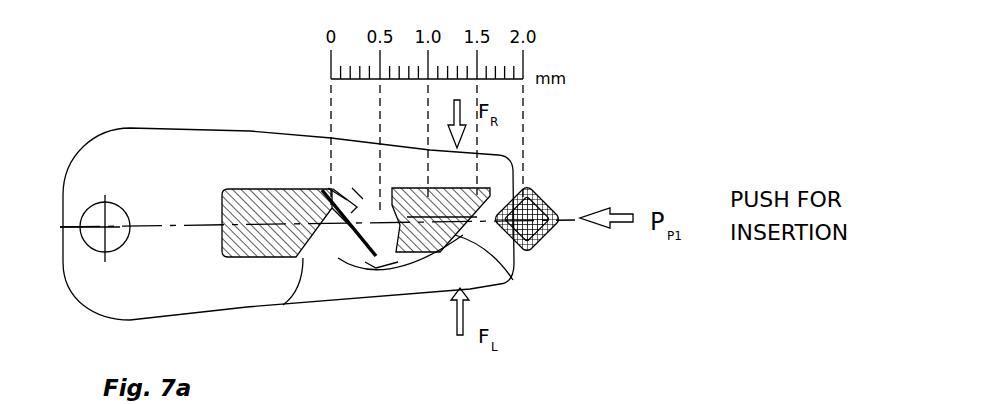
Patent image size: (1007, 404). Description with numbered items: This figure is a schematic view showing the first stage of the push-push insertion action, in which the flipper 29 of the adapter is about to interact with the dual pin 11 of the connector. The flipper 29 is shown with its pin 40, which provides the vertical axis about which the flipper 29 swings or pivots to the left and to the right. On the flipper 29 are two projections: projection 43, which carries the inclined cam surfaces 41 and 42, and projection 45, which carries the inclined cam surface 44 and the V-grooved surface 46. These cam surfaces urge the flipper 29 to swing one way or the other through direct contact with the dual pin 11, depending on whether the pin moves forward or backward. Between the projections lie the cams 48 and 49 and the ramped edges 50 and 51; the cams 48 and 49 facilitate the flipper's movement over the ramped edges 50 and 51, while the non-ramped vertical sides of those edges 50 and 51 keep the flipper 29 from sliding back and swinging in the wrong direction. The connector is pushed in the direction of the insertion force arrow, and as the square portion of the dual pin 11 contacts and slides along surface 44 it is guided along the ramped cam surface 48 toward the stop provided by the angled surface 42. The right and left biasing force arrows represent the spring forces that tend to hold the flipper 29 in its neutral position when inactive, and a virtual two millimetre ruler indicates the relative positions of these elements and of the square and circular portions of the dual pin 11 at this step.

The dual pin 11 is at (550, 207).
The flipper 29 is at (163, 188).
The pin 40 is at (95, 243).
The inclined cam surface 41 is at (310, 188).
The inclined cam surface 42 is at (347, 242).
The projection 43 is at (233, 190).
The inclined cam surface 44 is at (512, 277).
The projection 45 is at (478, 193).
The V-grooved surface 46 is at (352, 188).
The cam 48 is at (345, 250).
The cam 49 is at (343, 186).
The ramped edge 50 is at (383, 245).
The ramped edge 51 is at (345, 188).